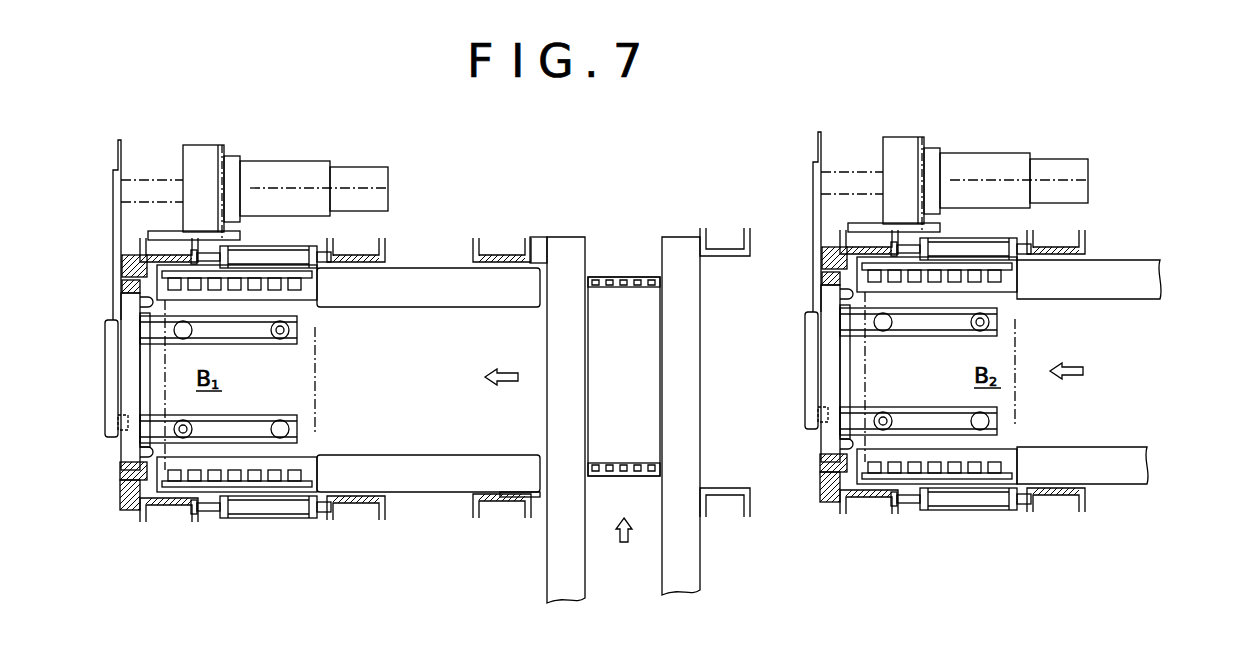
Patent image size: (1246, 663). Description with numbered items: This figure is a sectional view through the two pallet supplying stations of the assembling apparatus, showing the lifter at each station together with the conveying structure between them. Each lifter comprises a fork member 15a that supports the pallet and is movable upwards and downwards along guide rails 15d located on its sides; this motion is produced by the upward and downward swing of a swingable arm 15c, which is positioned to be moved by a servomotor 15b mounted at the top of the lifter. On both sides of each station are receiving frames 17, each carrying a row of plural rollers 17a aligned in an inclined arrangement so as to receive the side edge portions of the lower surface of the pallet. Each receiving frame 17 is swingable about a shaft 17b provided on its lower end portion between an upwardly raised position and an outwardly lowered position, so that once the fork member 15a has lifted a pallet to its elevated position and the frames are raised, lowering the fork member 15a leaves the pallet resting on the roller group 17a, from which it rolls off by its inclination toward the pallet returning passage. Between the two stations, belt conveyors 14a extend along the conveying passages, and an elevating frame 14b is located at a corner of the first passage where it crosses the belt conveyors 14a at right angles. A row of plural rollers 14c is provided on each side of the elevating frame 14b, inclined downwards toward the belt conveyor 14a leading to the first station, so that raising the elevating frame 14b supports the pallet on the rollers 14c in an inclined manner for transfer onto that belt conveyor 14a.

The belt conveyor 14a is at (418, 276).
The elevating frame 14b is at (648, 328).
The rollers 14c is at (620, 277).
The fork member 15a is at (223, 427).
The servomotor 15b is at (286, 170).
The swingable arm 15c is at (106, 373).
The guide rails 15d is at (125, 283).
The receiving frame 17 is at (288, 266).
The rollers 17a is at (283, 290).
The shaft 17b is at (338, 252).